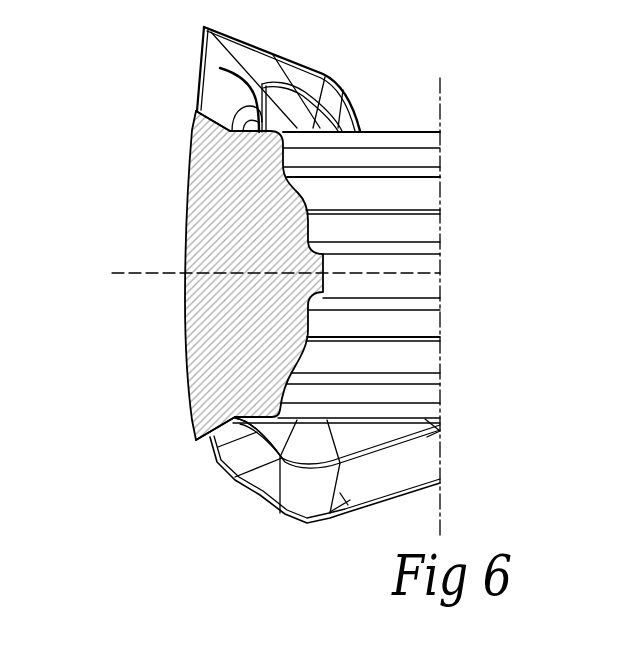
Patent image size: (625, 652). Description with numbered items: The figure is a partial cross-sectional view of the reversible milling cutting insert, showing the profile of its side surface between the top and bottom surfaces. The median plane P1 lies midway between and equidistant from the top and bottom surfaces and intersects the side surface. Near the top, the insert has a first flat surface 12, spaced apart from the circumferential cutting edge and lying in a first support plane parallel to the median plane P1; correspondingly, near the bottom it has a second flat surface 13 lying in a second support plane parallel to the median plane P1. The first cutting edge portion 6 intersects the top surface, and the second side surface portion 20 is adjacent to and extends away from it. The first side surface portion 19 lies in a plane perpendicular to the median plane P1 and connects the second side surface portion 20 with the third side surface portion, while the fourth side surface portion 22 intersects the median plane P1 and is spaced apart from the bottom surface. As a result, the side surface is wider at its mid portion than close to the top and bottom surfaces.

The first cutting edge portion 6 is at (197, 103).
The first flat surface 12 is at (220, 68).
The second flat surface 13 is at (258, 417).
The first side surface portion 19 is at (190, 235).
The second side surface portion 20 is at (191, 143).
The fourth side surface portion 22 is at (190, 412).
The median plane P1 is at (256, 275).